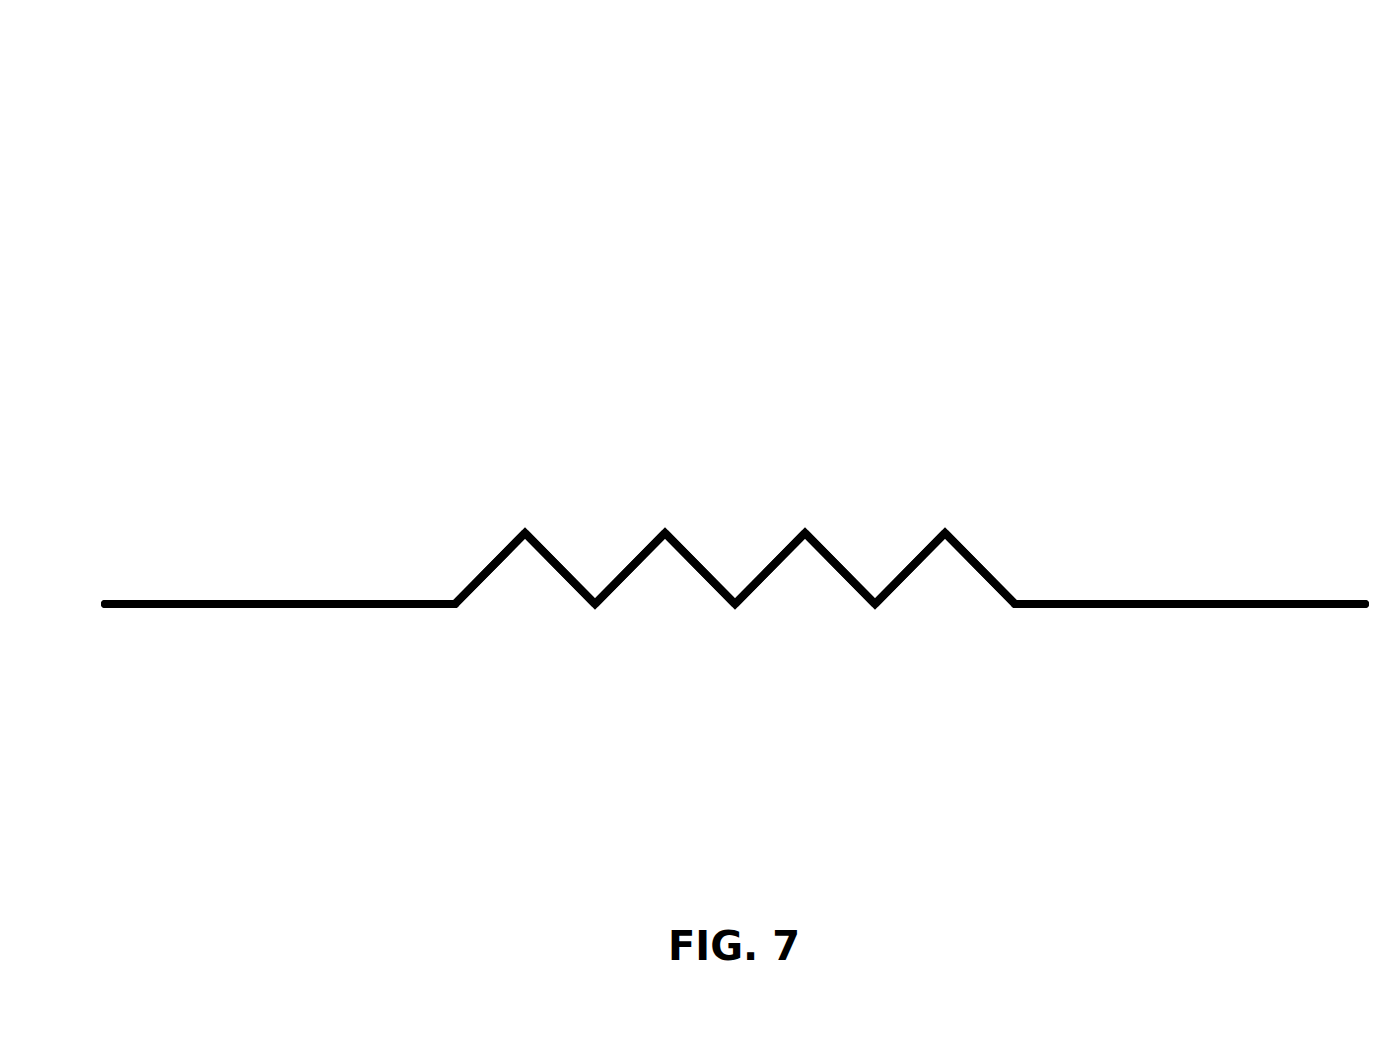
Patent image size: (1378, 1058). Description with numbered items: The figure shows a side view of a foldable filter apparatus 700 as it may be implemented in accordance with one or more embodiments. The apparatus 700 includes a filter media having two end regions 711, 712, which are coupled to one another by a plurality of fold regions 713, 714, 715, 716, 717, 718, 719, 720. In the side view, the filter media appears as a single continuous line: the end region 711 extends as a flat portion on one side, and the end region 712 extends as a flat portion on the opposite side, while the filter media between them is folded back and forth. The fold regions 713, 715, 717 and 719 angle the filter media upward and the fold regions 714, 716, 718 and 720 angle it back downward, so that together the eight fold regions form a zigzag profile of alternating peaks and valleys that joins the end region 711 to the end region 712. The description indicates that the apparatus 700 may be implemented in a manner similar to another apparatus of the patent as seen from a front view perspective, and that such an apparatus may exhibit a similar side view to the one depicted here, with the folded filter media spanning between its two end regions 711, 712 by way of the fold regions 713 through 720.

The foldable filter apparatus 700 is at (1282, 64).
The end region 711 is at (333, 609).
The end region 712 is at (1152, 609).
The fold region 713 is at (498, 553).
The fold region 714 is at (568, 586).
The fold region 715 is at (645, 555).
The fold region 716 is at (708, 586).
The fold region 717 is at (777, 557).
The fold region 718 is at (847, 586).
The fold region 719 is at (917, 556).
The fold region 720 is at (988, 586).